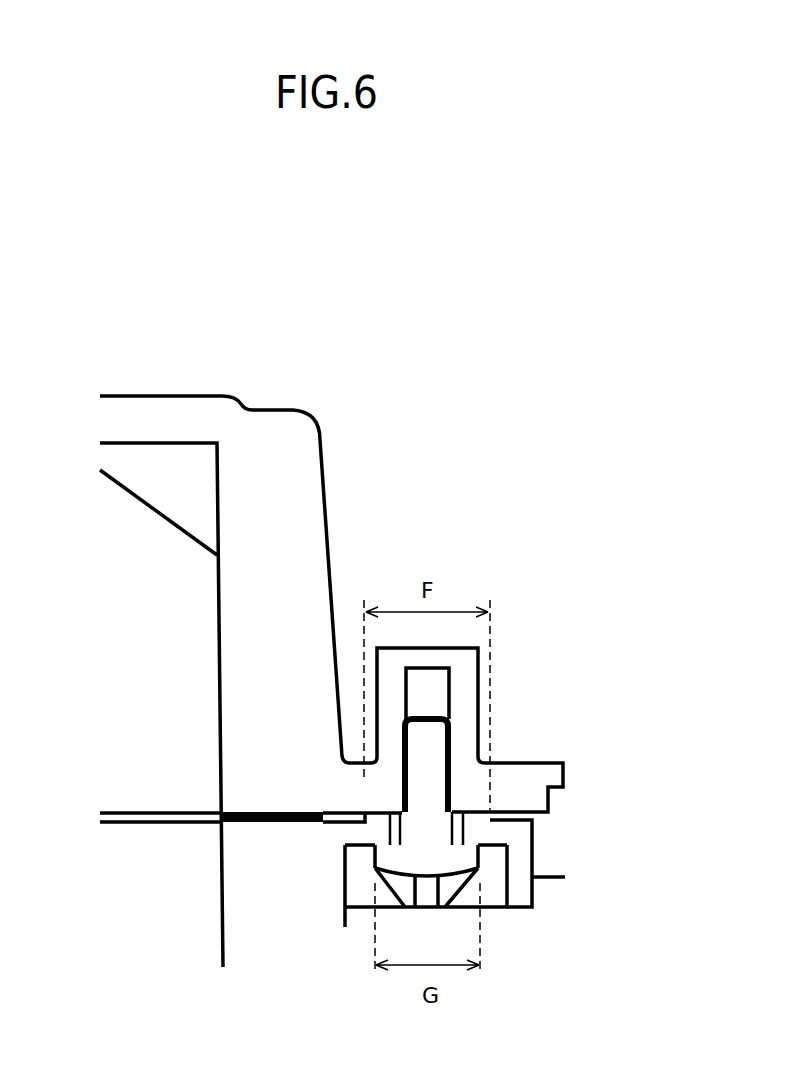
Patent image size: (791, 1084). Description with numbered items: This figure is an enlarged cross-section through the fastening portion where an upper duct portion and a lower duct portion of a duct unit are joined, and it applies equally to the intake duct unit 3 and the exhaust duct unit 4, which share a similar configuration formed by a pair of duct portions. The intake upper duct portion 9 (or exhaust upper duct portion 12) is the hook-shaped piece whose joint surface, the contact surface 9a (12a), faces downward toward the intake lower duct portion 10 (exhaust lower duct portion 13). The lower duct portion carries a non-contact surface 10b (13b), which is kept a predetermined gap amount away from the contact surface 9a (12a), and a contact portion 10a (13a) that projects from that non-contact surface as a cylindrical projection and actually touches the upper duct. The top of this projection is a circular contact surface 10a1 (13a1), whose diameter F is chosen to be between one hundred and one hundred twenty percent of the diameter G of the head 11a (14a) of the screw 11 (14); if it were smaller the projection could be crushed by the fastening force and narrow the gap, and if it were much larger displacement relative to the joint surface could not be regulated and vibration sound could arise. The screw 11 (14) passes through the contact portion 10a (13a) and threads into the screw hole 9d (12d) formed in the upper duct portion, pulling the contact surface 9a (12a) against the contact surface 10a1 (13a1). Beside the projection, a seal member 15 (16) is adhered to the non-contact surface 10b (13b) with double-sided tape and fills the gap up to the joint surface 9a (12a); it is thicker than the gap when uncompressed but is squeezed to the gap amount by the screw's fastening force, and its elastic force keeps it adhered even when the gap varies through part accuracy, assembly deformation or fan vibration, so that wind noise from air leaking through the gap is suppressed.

The intake duct unit 3 is at (196, 346).
The exhaust duct unit 4 is at (149, 345).
The intake upper duct portion 9 is at (361, 616).
The exhaust upper duct portion 12 is at (322, 468).
The contact surface 9a is at (254, 778).
The contact surface 12a is at (372, 808).
The screw hole 9d is at (510, 687).
The screw hole 12d is at (431, 697).
The intake lower duct portion 10 is at (401, 741).
The exhaust lower duct portion 13 is at (218, 960).
The contact portion 10a is at (531, 835).
The contact portion 13a is at (545, 816).
The contact surface 10a1 is at (554, 842).
The contact surface 13a1 is at (477, 814).
The non-contact surface 10b is at (372, 932).
The non-contact surface 13b is at (340, 825).
The screw 11 is at (509, 840).
The screw 14 is at (433, 754).
The head 11a is at (506, 918).
The head 14a is at (455, 860).
The seal member 15 is at (200, 855).
The seal member 16 is at (262, 823).